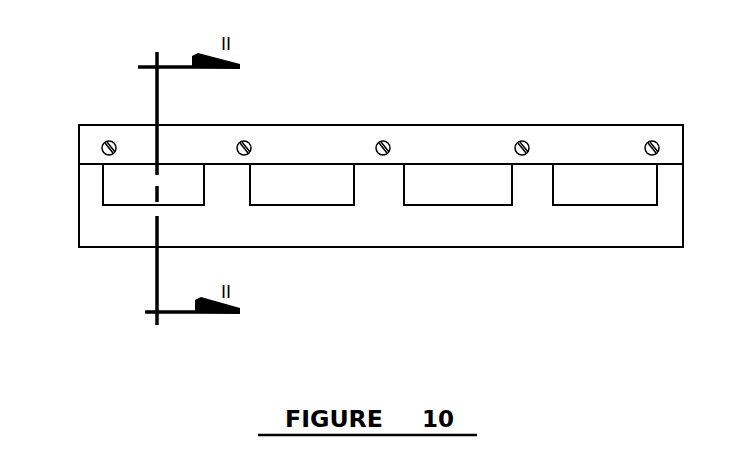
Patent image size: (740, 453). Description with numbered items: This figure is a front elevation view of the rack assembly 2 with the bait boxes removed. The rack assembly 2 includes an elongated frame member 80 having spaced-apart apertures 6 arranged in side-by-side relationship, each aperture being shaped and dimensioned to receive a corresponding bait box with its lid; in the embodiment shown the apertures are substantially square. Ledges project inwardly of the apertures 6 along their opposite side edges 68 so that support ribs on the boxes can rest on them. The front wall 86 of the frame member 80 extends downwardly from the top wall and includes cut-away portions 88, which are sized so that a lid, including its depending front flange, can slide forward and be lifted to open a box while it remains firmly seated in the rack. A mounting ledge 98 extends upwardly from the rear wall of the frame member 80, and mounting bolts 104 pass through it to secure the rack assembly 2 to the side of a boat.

The rack assembly 2 is at (79, 202).
The mounting ledge 98 is at (381, 89).
The mounting bolts 104 is at (523, 141).
The apertures 6 is at (586, 110).
The cut-away portions 88 is at (263, 190).
The side edges 68 is at (442, 257).
The front wall 86 is at (381, 289).
The frame member 80 is at (381, 238).